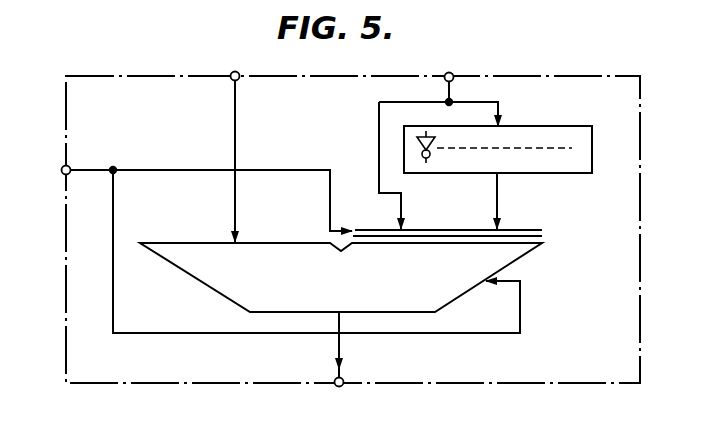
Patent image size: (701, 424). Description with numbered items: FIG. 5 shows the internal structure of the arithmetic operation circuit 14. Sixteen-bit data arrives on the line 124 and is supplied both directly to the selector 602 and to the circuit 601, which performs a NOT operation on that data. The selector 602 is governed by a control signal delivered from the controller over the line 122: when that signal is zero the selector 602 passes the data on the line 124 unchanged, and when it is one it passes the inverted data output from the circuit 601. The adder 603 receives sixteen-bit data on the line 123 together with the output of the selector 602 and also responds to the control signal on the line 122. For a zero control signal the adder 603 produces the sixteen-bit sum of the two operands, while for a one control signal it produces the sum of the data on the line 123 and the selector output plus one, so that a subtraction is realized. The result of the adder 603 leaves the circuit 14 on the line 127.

The arithmetic operation circuit 14 is at (642, 230).
The line 122 is at (62, 168).
The line 123 is at (239, 72).
The line 124 is at (453, 72).
The output line 127 is at (343, 386).
The circuit 601 is at (594, 142).
The selector 602 is at (542, 228).
The adder 603 is at (536, 249).